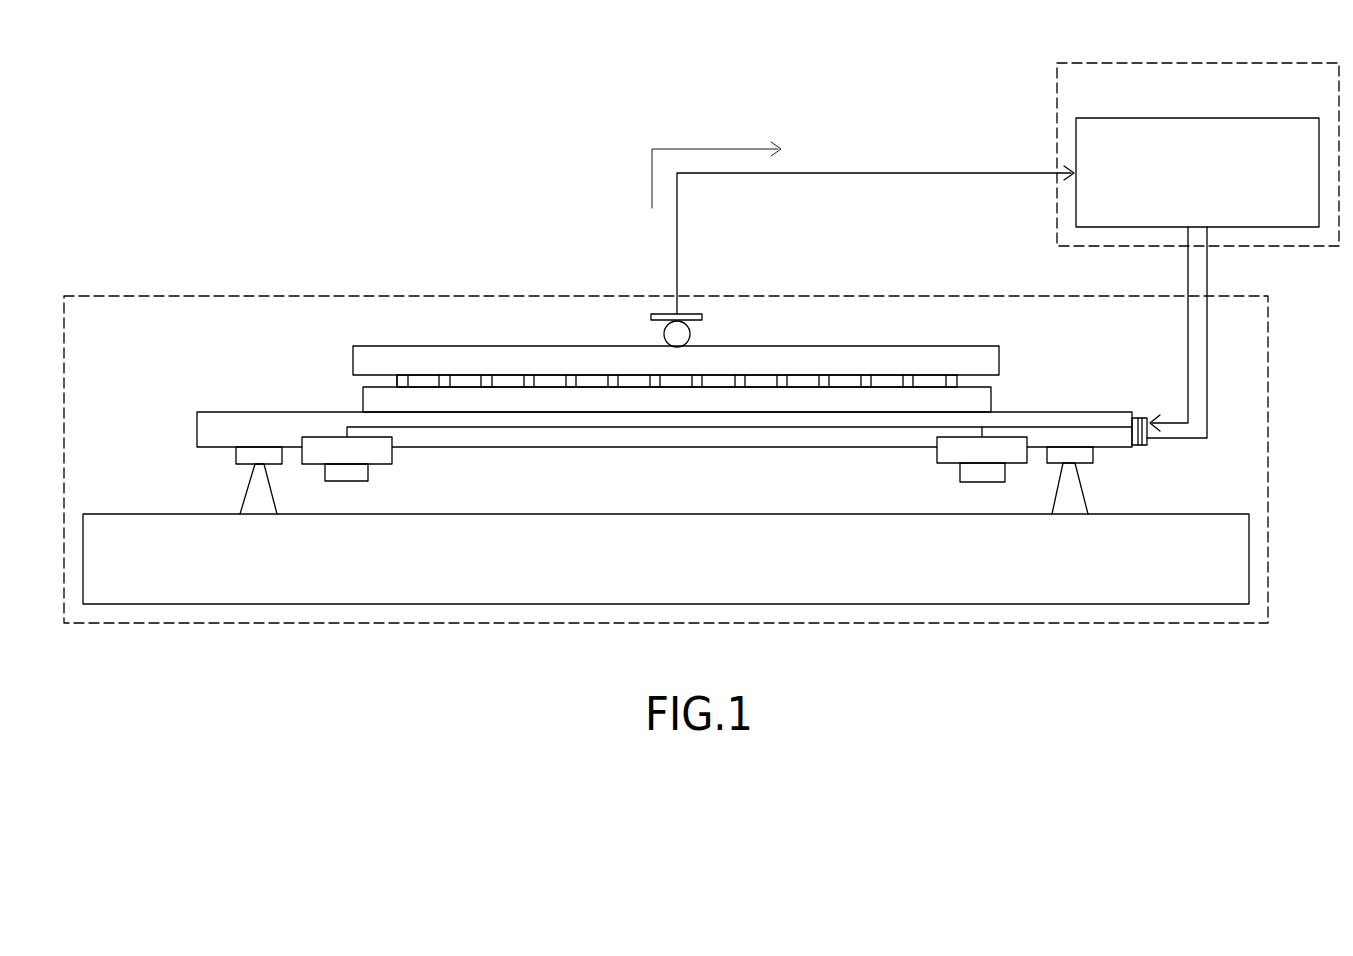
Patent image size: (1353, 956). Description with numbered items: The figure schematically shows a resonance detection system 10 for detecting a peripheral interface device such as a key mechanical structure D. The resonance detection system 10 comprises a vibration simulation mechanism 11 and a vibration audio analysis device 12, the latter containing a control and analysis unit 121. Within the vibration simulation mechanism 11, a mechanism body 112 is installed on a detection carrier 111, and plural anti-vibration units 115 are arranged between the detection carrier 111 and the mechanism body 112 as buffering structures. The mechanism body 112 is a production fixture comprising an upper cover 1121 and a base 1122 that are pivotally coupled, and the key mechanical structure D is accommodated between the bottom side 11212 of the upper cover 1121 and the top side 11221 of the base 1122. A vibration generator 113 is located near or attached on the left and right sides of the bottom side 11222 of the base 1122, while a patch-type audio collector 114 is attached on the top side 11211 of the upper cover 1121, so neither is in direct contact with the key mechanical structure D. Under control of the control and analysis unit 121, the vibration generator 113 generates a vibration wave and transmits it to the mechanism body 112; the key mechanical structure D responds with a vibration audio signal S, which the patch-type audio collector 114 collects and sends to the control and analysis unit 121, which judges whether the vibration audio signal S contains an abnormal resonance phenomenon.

The resonance detection system 10 is at (239, 94).
The vibration simulation mechanism 11 is at (330, 294).
The vibration audio analysis device 12 is at (1268, 60).
The control and analysis unit 121 is at (1235, 128).
The detection carrier 111 is at (176, 530).
The mechanism body 112 is at (606, 395).
The upper cover 1121 is at (780, 358).
The top side of the upper cover 11211 is at (940, 346).
The bottom side of the upper cover 11212 is at (1043, 372).
The base 1122 is at (228, 423).
The top side of the base 11221 is at (310, 412).
The bottom side of the base 11222 is at (487, 450).
The vibration generator 113 is at (378, 450).
The patch-type audio collector 114 is at (672, 338).
The anti-vibration unit 115 is at (255, 503).
The vibration audio signal S is at (716, 150).
The key mechanical structure D is at (512, 396).